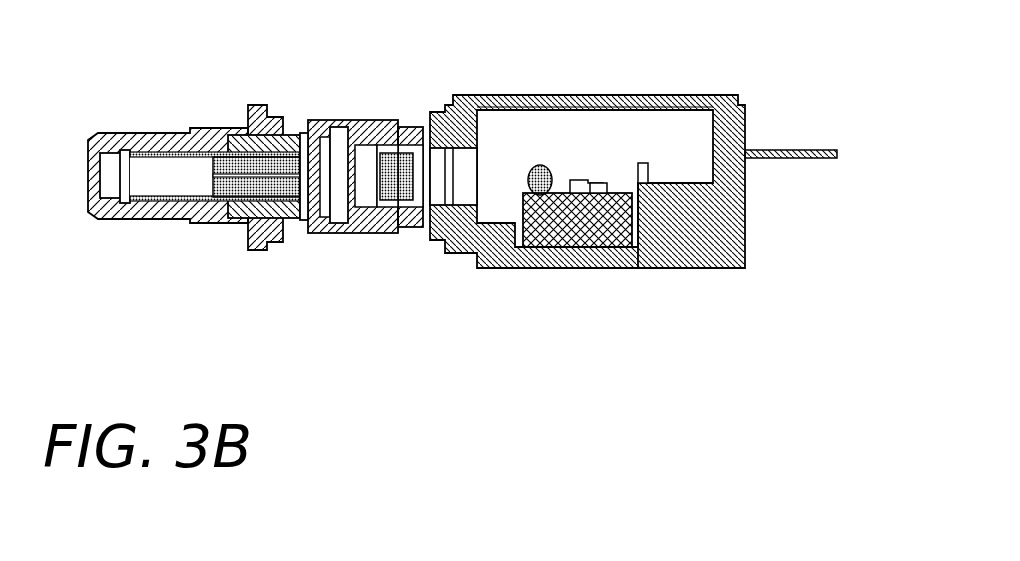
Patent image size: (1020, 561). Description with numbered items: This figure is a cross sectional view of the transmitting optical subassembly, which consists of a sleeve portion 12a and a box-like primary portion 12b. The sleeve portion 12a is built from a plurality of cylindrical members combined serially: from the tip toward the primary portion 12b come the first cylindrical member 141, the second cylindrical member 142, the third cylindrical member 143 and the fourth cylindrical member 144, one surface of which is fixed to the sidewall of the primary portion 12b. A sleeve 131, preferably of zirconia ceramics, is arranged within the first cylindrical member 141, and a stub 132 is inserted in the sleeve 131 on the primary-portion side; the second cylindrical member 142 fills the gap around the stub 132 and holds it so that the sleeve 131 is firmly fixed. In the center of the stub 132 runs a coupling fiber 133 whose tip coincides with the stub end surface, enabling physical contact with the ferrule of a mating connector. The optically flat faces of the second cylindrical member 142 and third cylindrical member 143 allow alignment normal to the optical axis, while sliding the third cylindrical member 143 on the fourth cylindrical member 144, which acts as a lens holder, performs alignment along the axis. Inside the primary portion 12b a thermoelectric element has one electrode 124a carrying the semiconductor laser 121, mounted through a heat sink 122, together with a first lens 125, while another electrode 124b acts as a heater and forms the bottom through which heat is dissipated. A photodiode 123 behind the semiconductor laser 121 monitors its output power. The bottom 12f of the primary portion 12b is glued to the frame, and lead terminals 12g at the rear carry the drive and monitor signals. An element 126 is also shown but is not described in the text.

The first cylindrical member 141 is at (128, 137).
The second cylindrical member 142 is at (272, 145).
The third cylindrical member 143 is at (350, 120).
The fourth cylindrical member 144 is at (405, 125).
The first lens 125 is at (538, 176).
The semiconductor laser 121 is at (583, 180).
The heat sink 122 is at (607, 180).
The photodiode 123 is at (648, 178).
The lead terminals 12g is at (802, 133).
The sleeve 131 is at (147, 199).
The stub 132 is at (232, 188).
The coupling fiber 133 is at (293, 180).
The spacer 126 is at (397, 183).
The sleeve portion 12a is at (420, 293).
The primary portion 12b is at (433, 295).
The bottom 12f is at (508, 270).
The another electrode 124b is at (610, 253).
The one electrode 124a is at (631, 198).